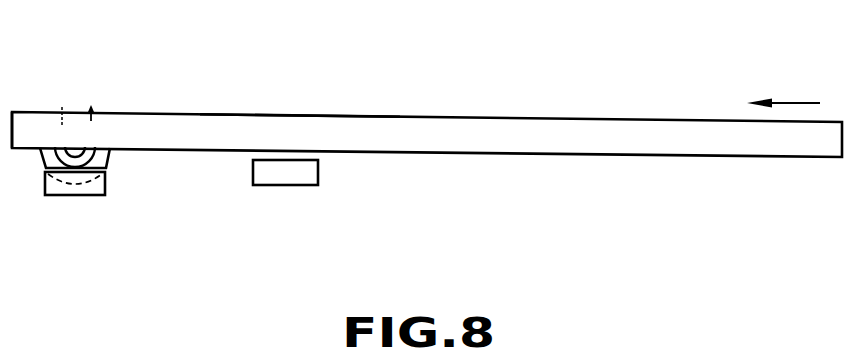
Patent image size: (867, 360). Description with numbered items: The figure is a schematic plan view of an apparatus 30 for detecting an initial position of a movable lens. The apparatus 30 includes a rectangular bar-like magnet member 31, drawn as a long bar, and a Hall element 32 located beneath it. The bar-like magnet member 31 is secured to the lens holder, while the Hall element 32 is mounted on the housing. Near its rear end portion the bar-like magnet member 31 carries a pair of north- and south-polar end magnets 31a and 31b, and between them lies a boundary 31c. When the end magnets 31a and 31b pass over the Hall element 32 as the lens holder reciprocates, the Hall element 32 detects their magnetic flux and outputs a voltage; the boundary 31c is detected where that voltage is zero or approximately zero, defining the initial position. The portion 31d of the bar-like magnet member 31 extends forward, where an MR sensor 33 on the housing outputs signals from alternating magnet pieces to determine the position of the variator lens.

The apparatus 30 is at (172, 210).
The bar-like magnet member 31 is at (492, 108).
The north-polar end magnet 31a is at (33, 137).
The south-polar end magnet 31b is at (107, 130).
The boundary 31c is at (75, 147).
The surface of movable member 31d is at (287, 130).
The Hall element 32 is at (97, 195).
The MR sensor 33 is at (297, 175).